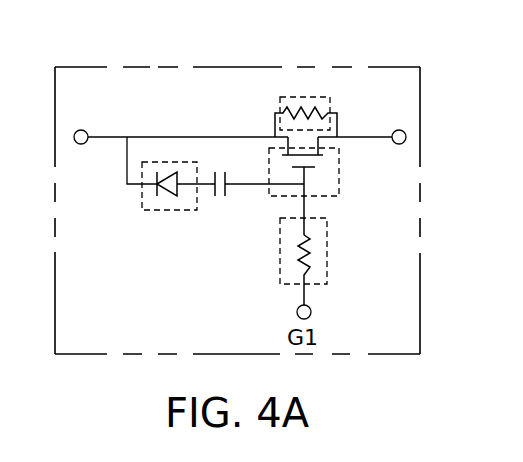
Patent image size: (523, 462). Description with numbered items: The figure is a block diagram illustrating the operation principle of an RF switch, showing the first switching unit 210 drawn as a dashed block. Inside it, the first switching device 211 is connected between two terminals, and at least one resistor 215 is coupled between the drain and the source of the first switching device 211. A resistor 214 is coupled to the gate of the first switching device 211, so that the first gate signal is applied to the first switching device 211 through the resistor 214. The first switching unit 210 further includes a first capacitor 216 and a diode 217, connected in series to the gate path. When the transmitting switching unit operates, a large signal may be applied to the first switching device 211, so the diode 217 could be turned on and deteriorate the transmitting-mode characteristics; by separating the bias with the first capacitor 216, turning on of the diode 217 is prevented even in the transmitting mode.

The first switching unit 210 is at (362, 66).
The first switching device 211 is at (339, 172).
The resistor 214 is at (327, 250).
The resistor 215 is at (330, 98).
The first capacitor 216 is at (217, 200).
The diode 217 is at (155, 212).